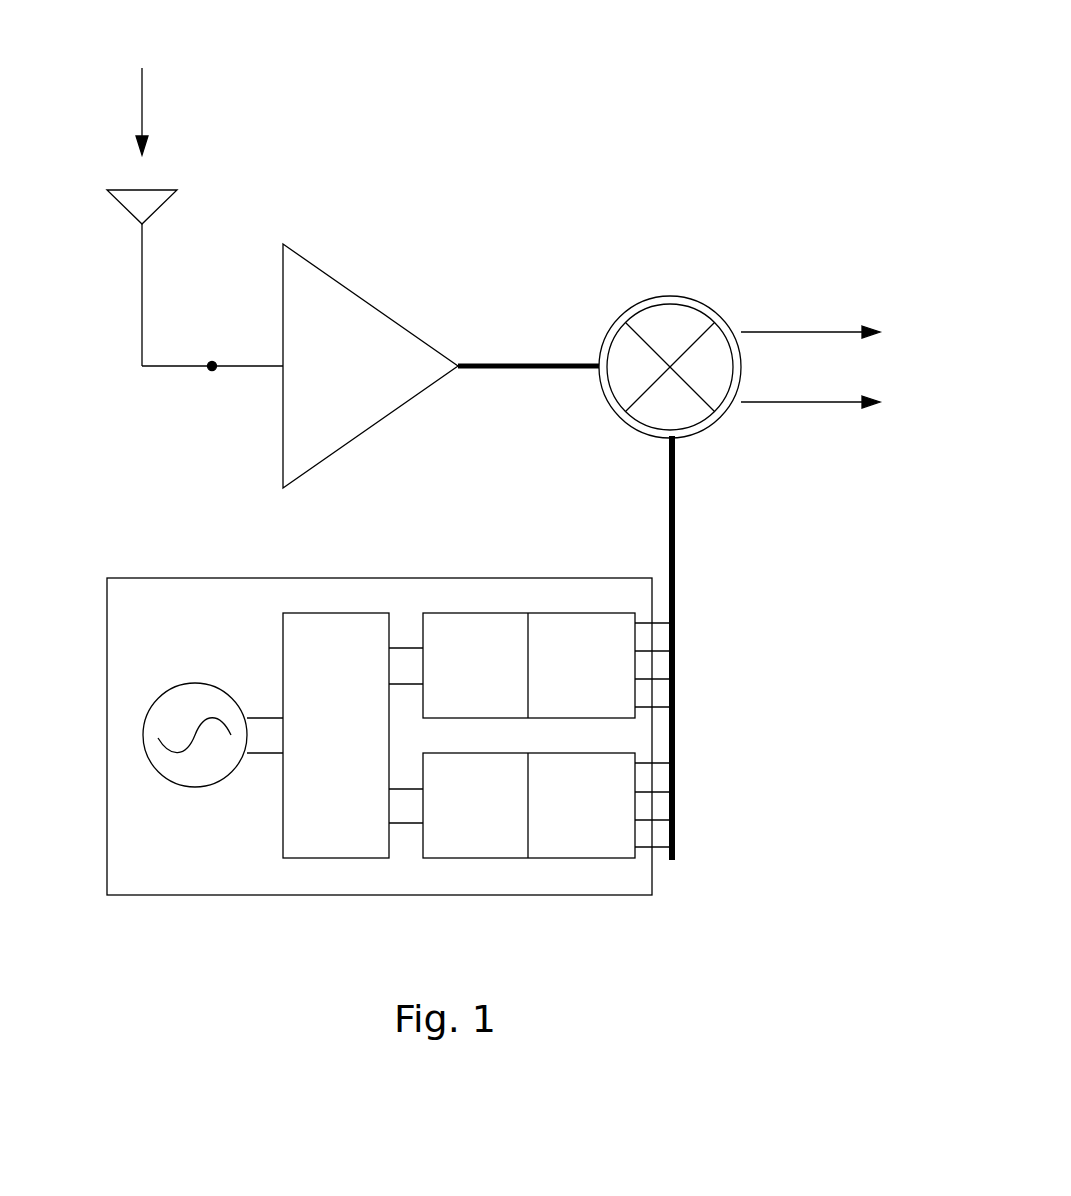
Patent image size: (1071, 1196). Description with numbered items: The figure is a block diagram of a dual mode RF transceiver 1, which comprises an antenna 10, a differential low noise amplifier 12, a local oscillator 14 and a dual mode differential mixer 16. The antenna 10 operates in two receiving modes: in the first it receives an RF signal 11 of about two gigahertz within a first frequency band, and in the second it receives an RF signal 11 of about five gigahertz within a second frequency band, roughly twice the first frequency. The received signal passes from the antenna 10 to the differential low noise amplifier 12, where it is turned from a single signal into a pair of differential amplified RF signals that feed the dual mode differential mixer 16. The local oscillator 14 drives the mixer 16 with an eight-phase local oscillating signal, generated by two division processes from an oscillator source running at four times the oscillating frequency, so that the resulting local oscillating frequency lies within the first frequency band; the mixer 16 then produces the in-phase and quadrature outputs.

The dual mode RF transceiver 1 is at (781, 97).
The antenna 10 is at (106, 208).
The RF signal 11 is at (141, 89).
The differential low noise amplifier 12 is at (413, 335).
The local oscillator 14 is at (107, 630).
The dual mode differential mixer 16 is at (720, 317).